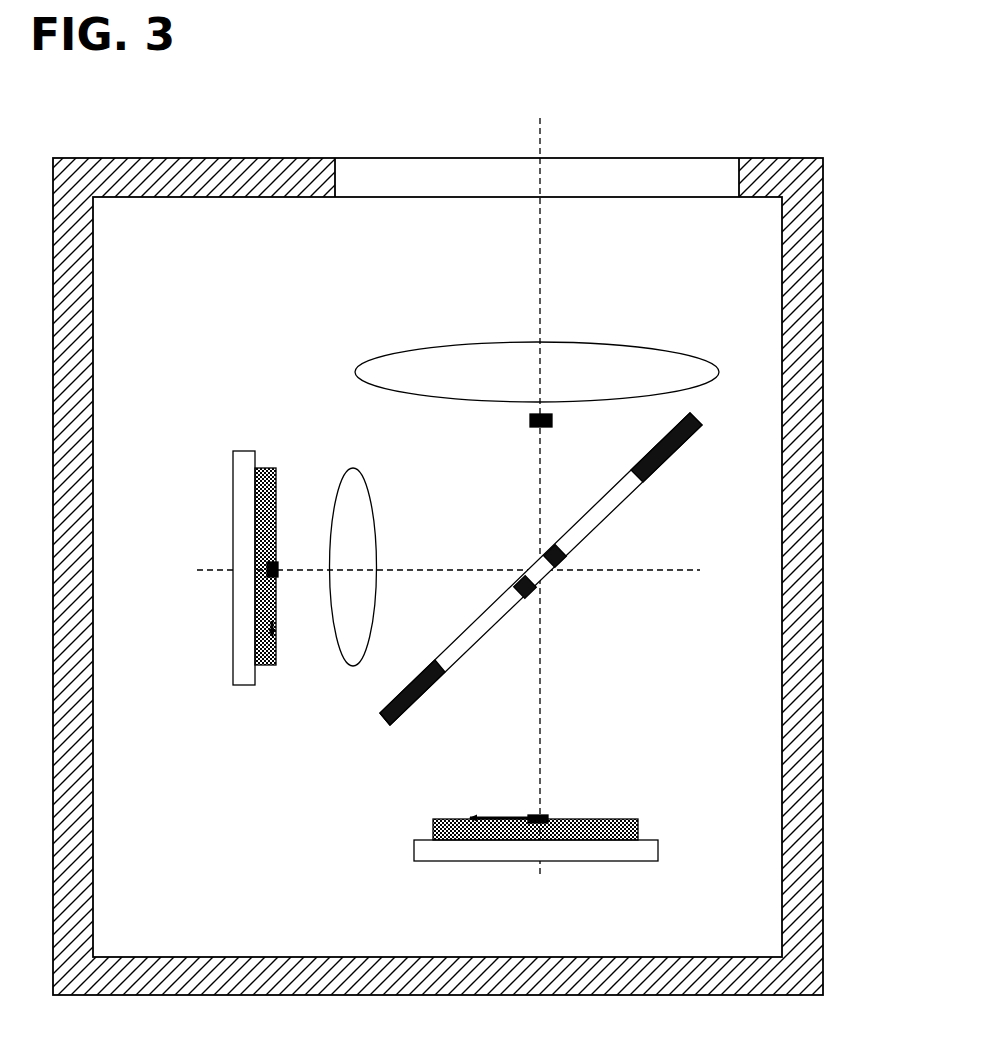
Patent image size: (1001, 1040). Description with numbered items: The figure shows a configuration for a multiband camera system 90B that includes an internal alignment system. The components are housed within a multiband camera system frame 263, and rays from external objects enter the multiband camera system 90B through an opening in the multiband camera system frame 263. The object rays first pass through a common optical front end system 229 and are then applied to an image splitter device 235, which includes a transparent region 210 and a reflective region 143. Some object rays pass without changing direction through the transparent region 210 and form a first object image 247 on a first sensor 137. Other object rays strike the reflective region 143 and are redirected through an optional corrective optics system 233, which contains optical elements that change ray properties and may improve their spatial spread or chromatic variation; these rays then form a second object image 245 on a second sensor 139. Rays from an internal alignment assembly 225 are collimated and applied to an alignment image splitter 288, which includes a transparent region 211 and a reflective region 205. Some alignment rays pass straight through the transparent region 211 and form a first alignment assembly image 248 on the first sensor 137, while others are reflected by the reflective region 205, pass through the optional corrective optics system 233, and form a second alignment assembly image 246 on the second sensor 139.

The multiband camera system 90B is at (668, 81).
The multiband camera system frame 263 is at (823, 601).
The optical front end system 229 is at (405, 349).
The internal alignment assembly 225 is at (527, 421).
The second sensor 139 is at (240, 687).
The second object image 245 is at (278, 609).
The second alignment assembly image 246 is at (280, 564).
The optional corrective optics system 233 is at (379, 540).
The transparent region 210 is at (627, 501).
The reflective region 143 is at (698, 431).
The image splitter device 235 is at (377, 723).
The reflective region 205 is at (533, 596).
The alignment image splitter 288 is at (551, 543).
The transparent region 211 is at (531, 567).
The first sensor 137 is at (643, 831).
The first alignment assembly image 248 is at (551, 814).
The first object image 247 is at (505, 814).